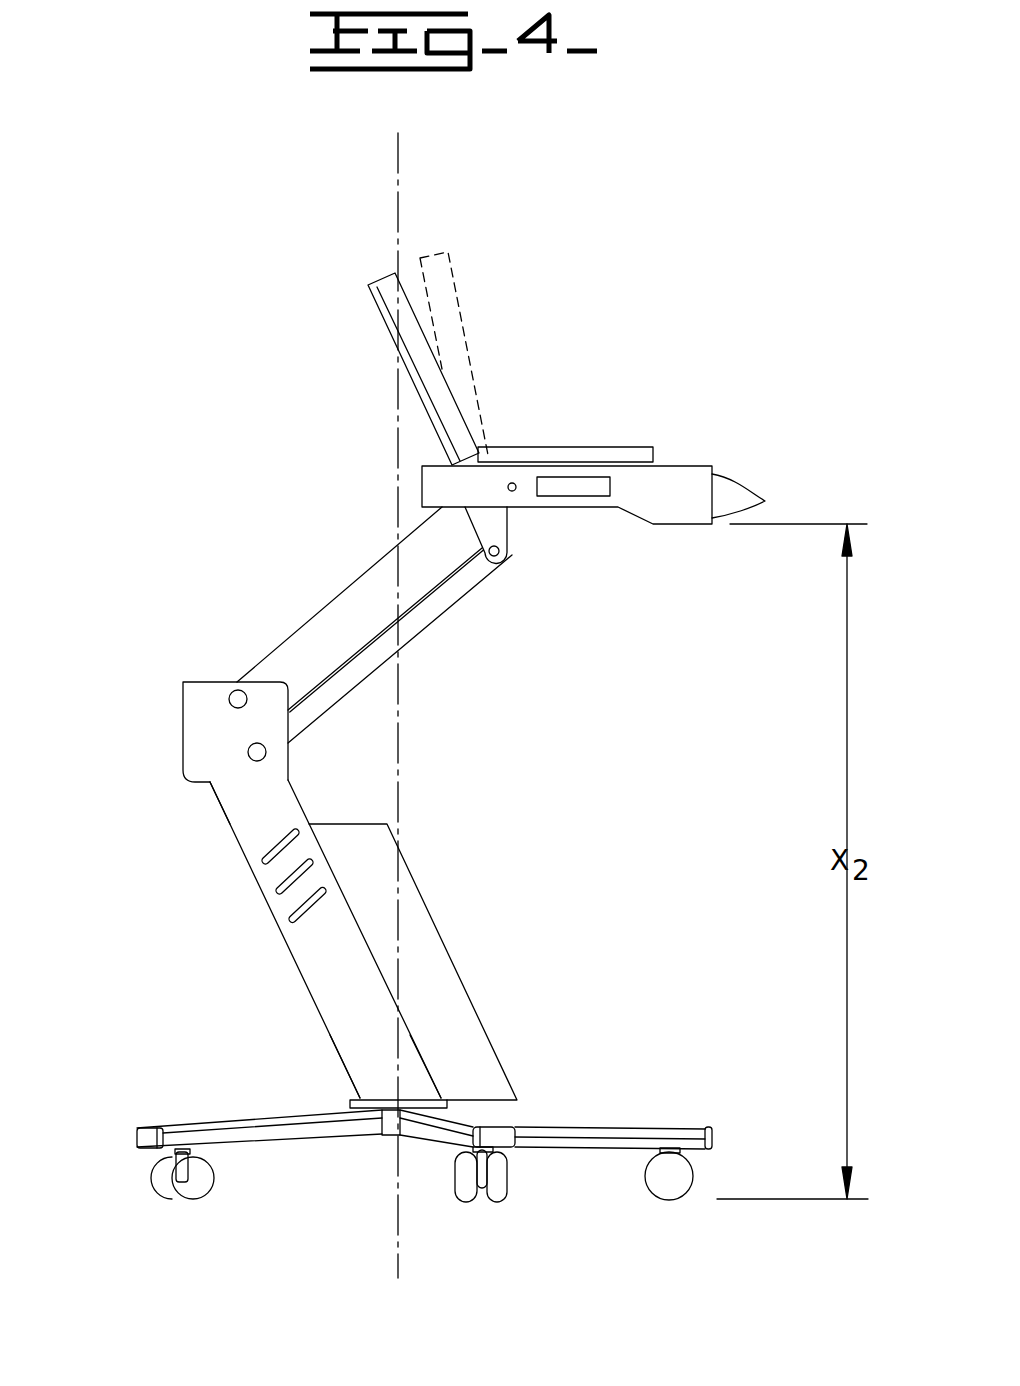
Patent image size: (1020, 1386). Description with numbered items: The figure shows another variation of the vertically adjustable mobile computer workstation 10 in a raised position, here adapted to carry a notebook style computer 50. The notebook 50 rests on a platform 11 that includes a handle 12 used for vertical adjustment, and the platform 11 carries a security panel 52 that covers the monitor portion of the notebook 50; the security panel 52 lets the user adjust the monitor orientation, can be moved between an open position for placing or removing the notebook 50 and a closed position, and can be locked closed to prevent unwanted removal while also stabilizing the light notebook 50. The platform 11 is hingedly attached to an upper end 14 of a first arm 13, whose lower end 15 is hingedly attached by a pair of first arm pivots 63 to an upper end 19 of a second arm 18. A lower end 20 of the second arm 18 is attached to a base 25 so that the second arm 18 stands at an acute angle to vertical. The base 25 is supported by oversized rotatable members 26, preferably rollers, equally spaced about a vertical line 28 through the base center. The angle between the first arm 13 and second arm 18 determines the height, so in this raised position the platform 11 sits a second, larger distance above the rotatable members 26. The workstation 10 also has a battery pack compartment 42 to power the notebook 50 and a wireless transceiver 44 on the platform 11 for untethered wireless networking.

The vertically adjustable mobile computer workstation 10 is at (594, 299).
The platform 11 is at (642, 517).
The handle 12 is at (765, 501).
The first arm 13 is at (360, 575).
The upper end of first arm 14 is at (420, 522).
The lower end of first arm 15 is at (248, 672).
The second arm 18 is at (280, 935).
The upper end of second arm 19 is at (213, 795).
The lower end of second arm 20 is at (330, 1037).
The base 25 is at (427, 1097).
The rotatable members 26 is at (153, 1180).
The vertical line 28 is at (398, 1190).
The battery pack compartment 42 is at (452, 950).
The wireless transceiver 44 is at (558, 497).
The notebook style computer 50 is at (567, 441).
The security panel 52 is at (368, 284).
The first arm pivots 63 is at (233, 702).